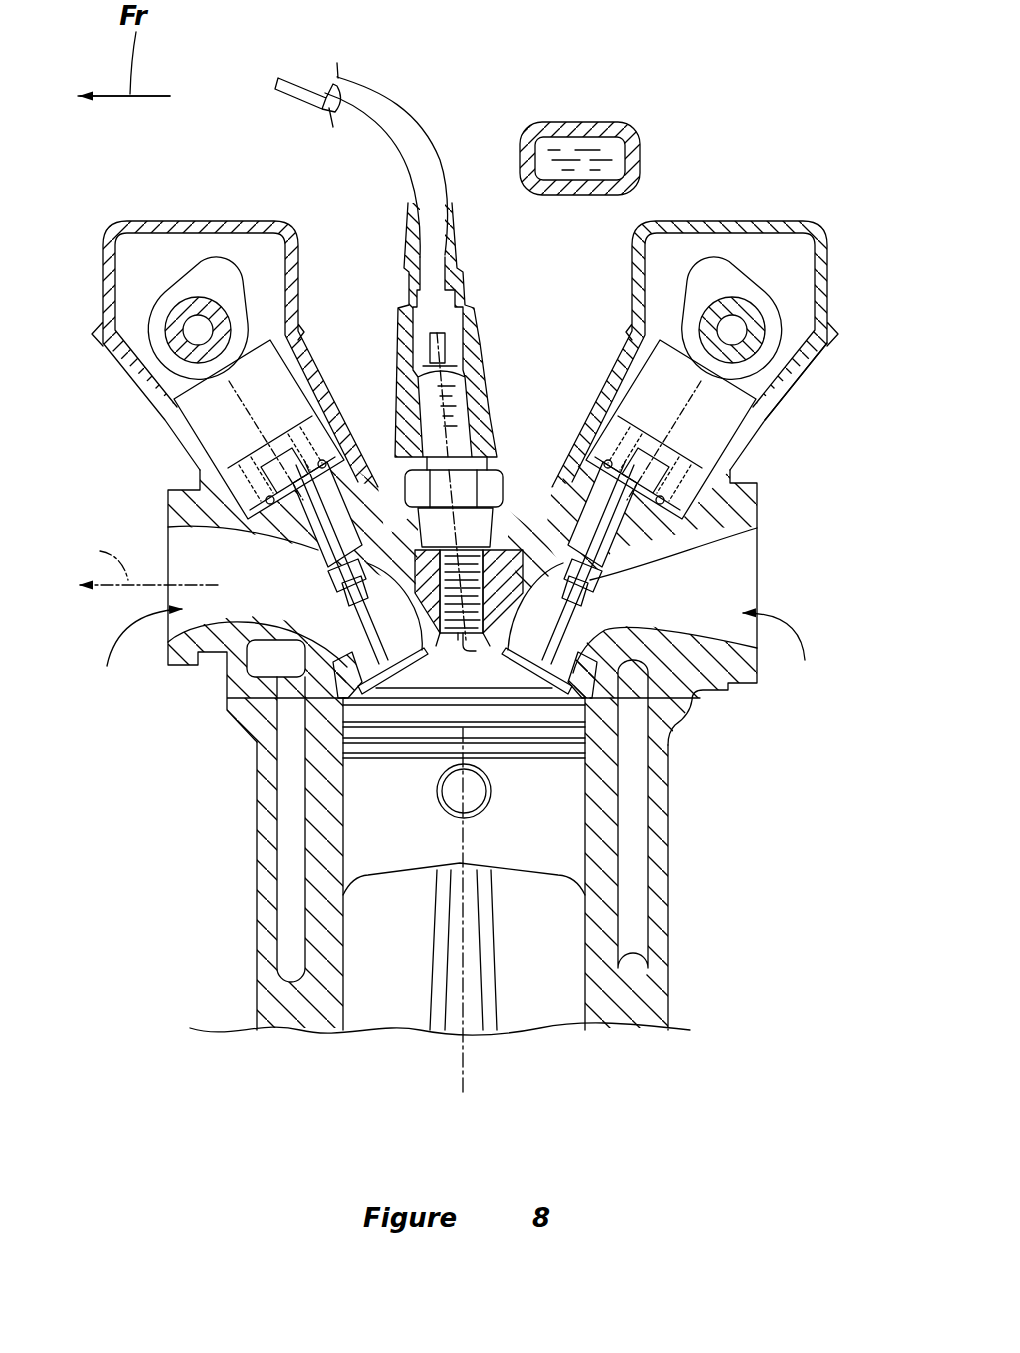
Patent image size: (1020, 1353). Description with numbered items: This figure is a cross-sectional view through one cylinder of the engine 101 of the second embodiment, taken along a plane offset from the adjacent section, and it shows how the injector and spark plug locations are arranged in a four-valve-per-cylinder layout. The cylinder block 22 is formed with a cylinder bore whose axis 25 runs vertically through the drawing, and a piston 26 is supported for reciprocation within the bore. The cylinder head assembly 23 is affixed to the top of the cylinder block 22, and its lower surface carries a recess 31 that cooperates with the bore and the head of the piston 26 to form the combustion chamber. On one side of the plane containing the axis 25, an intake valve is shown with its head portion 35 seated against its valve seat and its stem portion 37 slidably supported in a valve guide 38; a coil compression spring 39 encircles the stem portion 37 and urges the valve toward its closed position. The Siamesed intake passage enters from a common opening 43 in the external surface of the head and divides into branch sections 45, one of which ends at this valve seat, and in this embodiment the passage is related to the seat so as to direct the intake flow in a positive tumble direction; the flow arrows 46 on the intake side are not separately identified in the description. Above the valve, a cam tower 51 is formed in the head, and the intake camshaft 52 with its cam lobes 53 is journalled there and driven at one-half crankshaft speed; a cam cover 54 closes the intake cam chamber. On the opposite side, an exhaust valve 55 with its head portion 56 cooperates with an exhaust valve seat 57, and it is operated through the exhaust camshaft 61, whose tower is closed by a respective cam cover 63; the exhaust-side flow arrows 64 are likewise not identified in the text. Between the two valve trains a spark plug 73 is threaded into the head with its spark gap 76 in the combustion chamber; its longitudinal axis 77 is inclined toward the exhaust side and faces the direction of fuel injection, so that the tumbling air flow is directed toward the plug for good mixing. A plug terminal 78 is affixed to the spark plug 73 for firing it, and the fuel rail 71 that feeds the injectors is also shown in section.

The engine 101 is at (742, 76).
The cylinder head assembly 23 is at (790, 132).
The cylinder block 22 is at (674, 954).
The cylinder bore axis 25 is at (467, 1072).
The piston 26 is at (567, 852).
The cylinder head recess 31 is at (491, 692).
The intake valve head portion 35 is at (650, 738).
The intake valve stem portion 37 is at (691, 464).
The valve guide 38 is at (584, 512).
The coil compression spring 39 is at (606, 456).
The common opening 43 is at (785, 656).
The branch section 45 is at (697, 690).
The intake port 46 is at (727, 588).
The cam tower 51 is at (791, 368).
The intake camshaft 52 is at (688, 296).
The cam lobe 53 is at (735, 262).
The cam cover 54 is at (802, 212).
The exhaust valve 55 is at (304, 540).
The exhaust valve head portion 56 is at (390, 698).
The exhaust valve seat 57 is at (318, 667).
The exhaust camshaft 61 is at (168, 283).
The cam cover 63 is at (131, 558).
The exhaust gas flow 64 is at (130, 655).
The fuel rail 71 is at (597, 121).
The spark plug 73 is at (562, 142).
The spark gap 76 is at (457, 658).
The spark plug longitudinal axis 77 is at (414, 444).
The plug terminal 78 is at (409, 365).